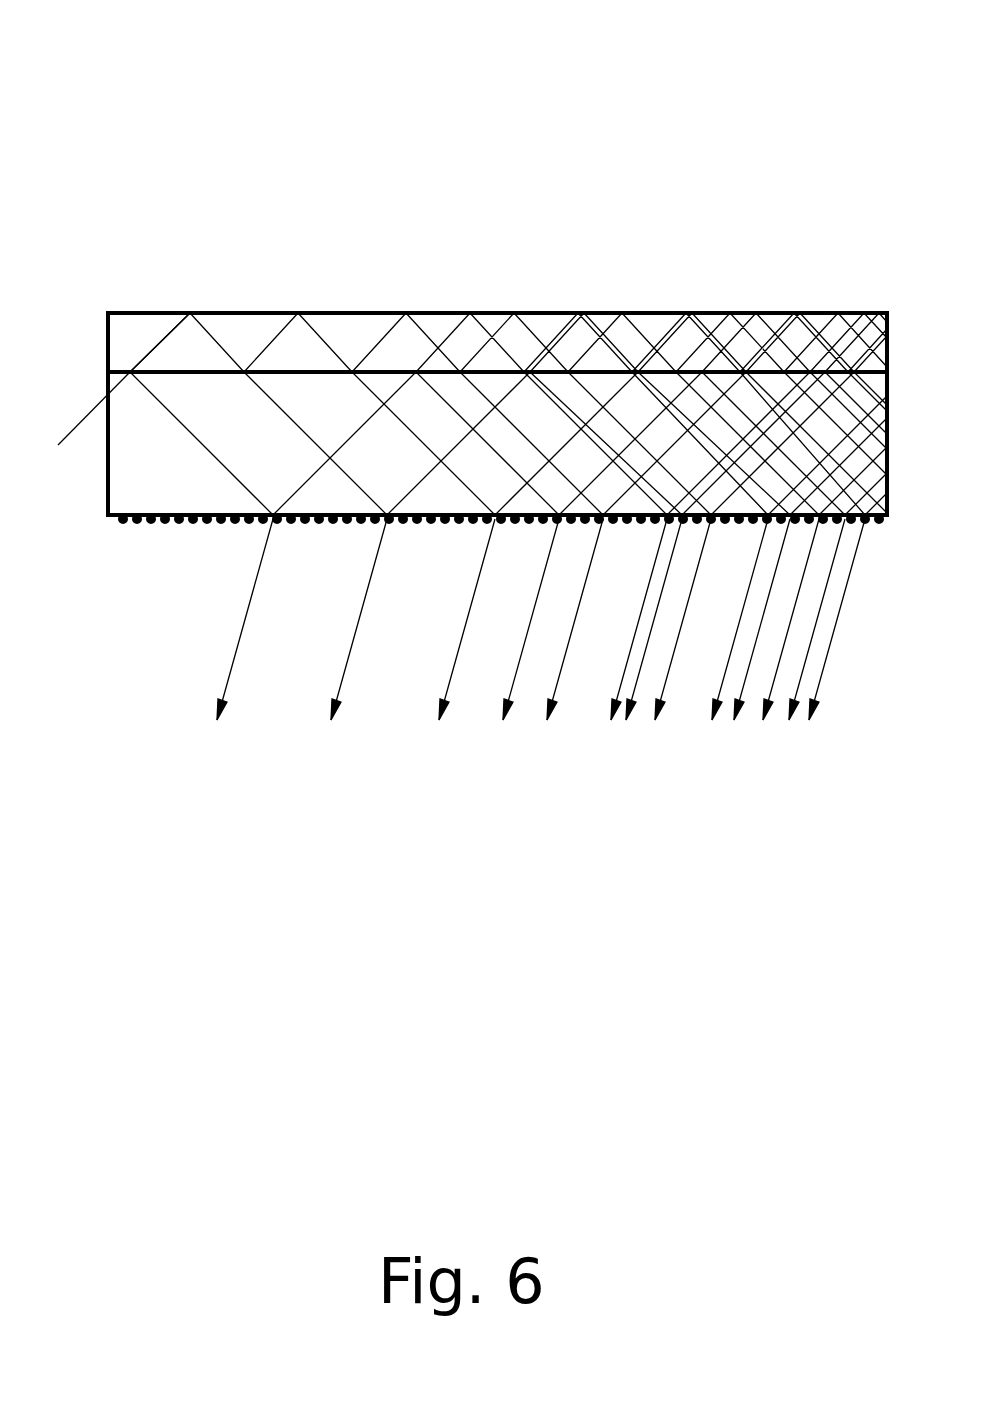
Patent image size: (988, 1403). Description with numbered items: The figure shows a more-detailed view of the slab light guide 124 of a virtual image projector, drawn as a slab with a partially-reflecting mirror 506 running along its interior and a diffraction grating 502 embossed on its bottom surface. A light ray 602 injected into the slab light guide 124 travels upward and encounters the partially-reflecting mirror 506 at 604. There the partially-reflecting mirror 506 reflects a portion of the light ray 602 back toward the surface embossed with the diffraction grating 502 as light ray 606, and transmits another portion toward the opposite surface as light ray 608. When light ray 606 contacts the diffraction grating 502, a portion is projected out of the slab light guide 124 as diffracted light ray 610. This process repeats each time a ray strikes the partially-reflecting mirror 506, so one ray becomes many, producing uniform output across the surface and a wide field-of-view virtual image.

The slab light guide 124 is at (127, 58).
The diffraction grating 502 is at (161, 522).
The partially-reflecting mirror 506 is at (169, 376).
The light ray 602 is at (90, 410).
The encounter point 604 is at (128, 372).
The light ray 606 is at (200, 446).
The light ray 608 is at (166, 338).
The diffracted light ray 610 is at (235, 640).